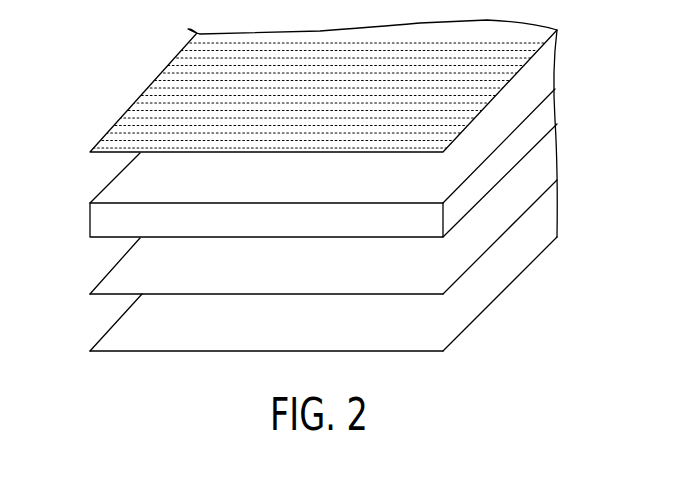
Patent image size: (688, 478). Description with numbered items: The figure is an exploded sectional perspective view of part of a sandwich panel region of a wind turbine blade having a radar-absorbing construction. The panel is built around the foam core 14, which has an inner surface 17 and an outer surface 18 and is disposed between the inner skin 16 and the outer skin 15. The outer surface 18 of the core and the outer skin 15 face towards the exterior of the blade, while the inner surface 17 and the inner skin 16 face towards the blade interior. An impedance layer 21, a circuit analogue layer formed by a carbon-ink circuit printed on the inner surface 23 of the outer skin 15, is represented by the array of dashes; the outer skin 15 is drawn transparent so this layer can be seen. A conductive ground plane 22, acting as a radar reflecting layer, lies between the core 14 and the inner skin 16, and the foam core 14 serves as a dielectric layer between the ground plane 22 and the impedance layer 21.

The foam core 14 is at (98, 223).
The outer skin 15 is at (533, 55).
The inner skin 16 is at (455, 317).
The inner surface 17 is at (97, 248).
The outer surface 18 is at (460, 160).
The impedance layer 21 is at (163, 88).
The conductive ground plane 22 is at (490, 227).
The inner surface 23 is at (97, 160).